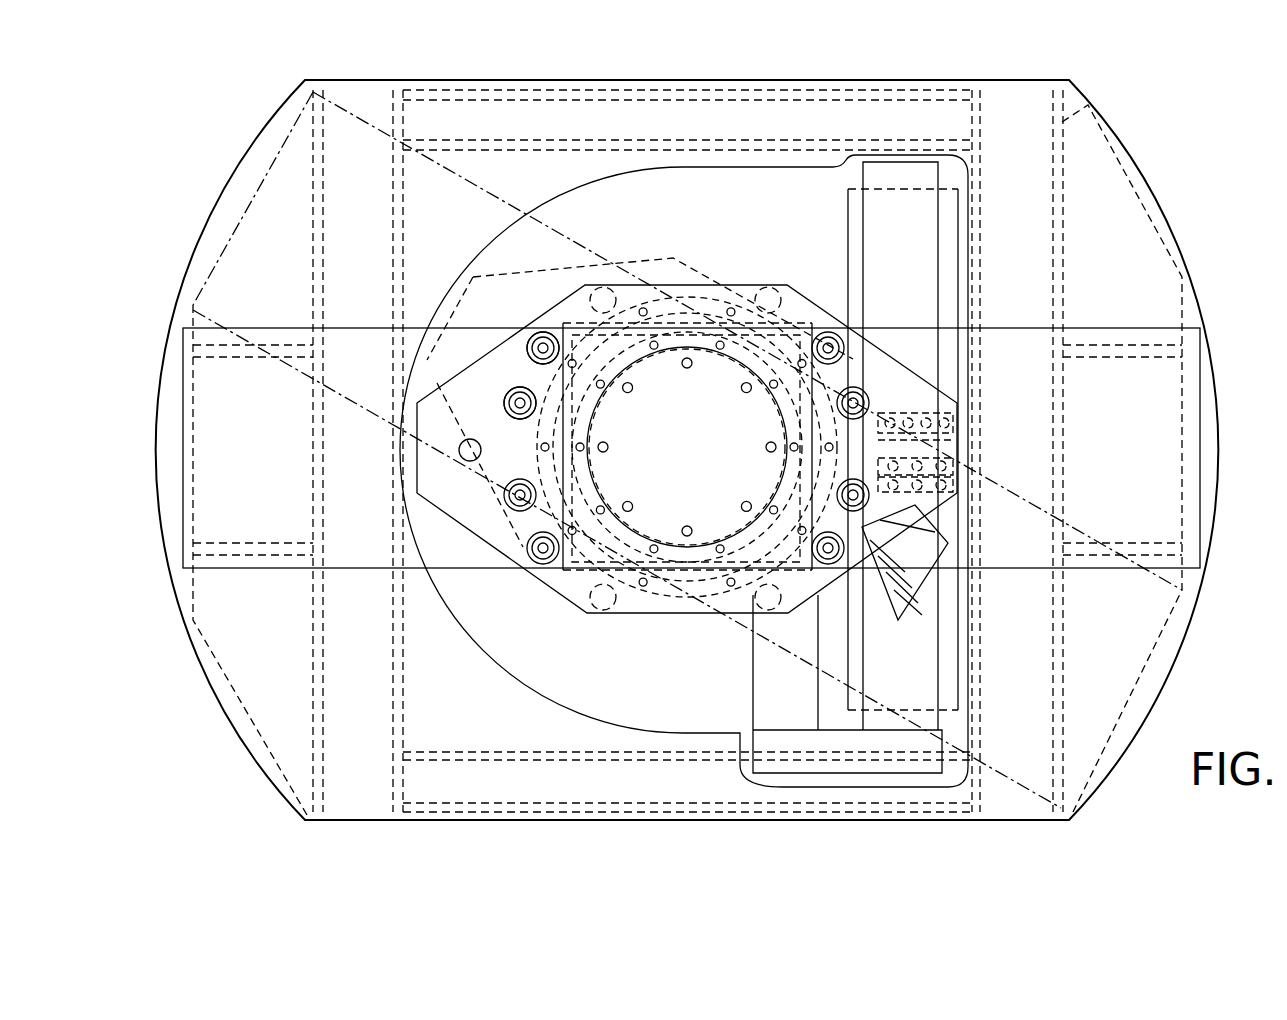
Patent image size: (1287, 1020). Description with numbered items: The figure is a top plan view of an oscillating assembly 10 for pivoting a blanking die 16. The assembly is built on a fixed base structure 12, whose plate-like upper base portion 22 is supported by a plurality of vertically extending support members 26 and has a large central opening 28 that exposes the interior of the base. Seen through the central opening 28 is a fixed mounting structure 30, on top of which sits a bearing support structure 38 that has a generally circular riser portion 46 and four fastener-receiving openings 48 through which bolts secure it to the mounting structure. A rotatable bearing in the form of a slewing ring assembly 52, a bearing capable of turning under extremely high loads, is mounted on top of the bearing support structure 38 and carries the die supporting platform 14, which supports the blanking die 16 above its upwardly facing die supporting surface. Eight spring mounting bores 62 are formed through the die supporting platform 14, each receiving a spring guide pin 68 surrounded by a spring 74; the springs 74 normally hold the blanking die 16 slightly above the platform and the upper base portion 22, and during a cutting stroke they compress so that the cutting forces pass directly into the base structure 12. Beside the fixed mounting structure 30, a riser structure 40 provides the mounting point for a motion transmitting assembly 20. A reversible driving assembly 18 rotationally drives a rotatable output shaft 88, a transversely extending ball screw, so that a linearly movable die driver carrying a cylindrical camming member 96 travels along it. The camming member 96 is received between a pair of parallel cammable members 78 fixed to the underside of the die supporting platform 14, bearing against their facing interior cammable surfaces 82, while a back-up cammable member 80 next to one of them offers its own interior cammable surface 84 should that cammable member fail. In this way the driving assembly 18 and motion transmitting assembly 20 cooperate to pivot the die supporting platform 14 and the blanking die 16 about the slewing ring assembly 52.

The oscillating assembly 10 is at (1203, 132).
The fixed base structure 12 is at (1222, 286).
The die supporting platform 14 is at (798, 268).
The blanking die 16 is at (1195, 530).
The reversible driving assembly 18 is at (872, 782).
The motion transmitting assembly 20 is at (998, 489).
The upper base portion 22 is at (365, 800).
The support members 26 is at (1085, 108).
The central opening 28 is at (627, 712).
The fixed mounting structure 30 is at (503, 330).
The bearing support structure 38 is at (668, 530).
The riser structure 40 is at (945, 228).
The circular riser portion 46 is at (693, 523).
The fastener-receiving openings 48 is at (609, 447).
The slewing ring assembly 52 is at (678, 347).
The spring mounting bores 62 is at (835, 340).
The spring guide pins 68 is at (508, 396).
The spring 74 is at (866, 392).
The cammable members 78 is at (960, 410).
The back-up cammable member 80 is at (975, 525).
The interior cammable surfaces 82 is at (965, 450).
The interior cammable surface 84 is at (970, 470).
The rotatable output shaft 88 is at (925, 678).
The camming member 96 is at (800, 460).